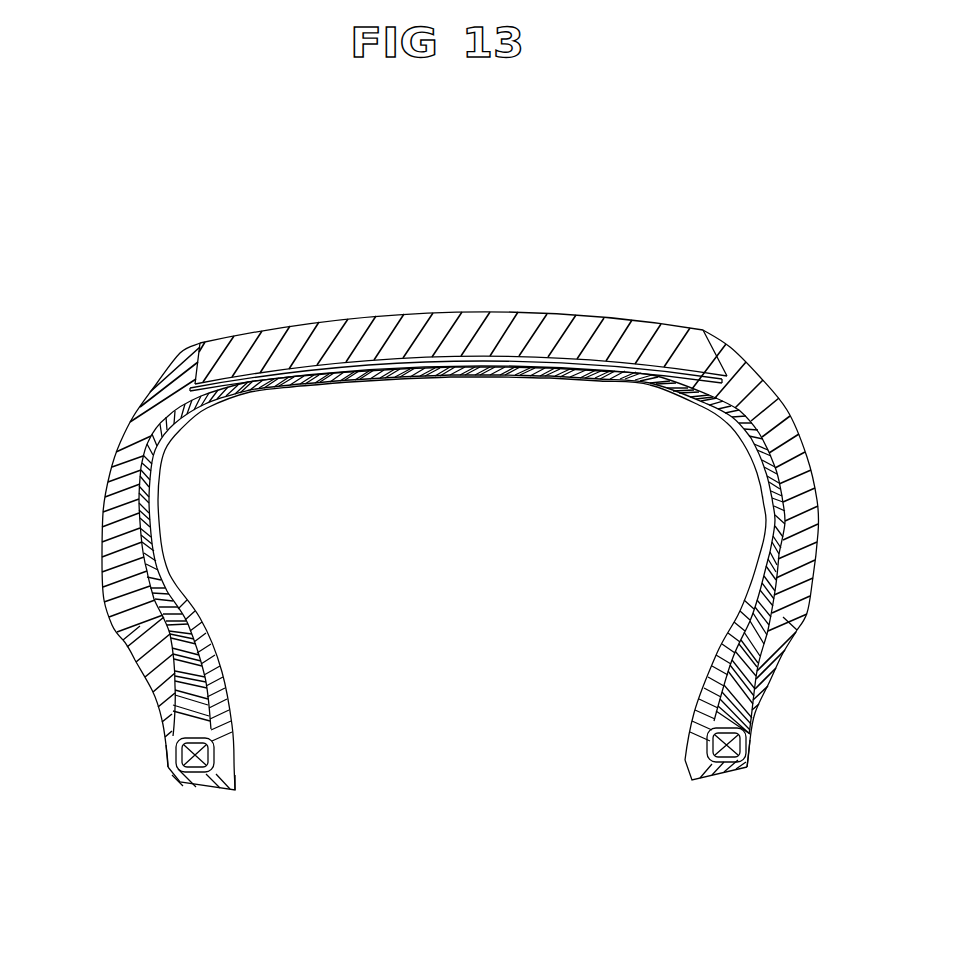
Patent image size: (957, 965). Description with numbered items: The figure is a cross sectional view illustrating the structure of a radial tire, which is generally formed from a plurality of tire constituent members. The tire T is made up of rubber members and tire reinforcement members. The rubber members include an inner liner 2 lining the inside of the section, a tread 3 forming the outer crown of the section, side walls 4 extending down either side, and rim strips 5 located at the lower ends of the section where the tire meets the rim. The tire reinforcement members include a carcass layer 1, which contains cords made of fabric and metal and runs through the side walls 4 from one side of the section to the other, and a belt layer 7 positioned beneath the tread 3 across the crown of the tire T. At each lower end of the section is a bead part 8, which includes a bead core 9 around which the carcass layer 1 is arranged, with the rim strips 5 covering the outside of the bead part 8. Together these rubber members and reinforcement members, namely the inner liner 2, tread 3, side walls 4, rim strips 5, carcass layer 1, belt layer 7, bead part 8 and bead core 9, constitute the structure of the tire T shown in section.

The tire T is at (538, 271).
The carcass layer 1 is at (737, 661).
The inner liner 2 is at (455, 376).
The tread 3 is at (421, 330).
The side walls 4 is at (137, 416).
The rim strips 5 is at (198, 778).
The belt layer 7 is at (320, 362).
The bead part 8 is at (152, 781).
The bead core 9 is at (209, 755).